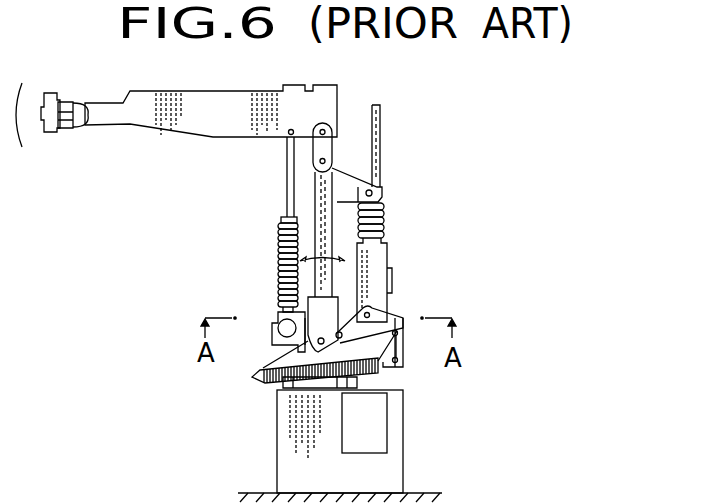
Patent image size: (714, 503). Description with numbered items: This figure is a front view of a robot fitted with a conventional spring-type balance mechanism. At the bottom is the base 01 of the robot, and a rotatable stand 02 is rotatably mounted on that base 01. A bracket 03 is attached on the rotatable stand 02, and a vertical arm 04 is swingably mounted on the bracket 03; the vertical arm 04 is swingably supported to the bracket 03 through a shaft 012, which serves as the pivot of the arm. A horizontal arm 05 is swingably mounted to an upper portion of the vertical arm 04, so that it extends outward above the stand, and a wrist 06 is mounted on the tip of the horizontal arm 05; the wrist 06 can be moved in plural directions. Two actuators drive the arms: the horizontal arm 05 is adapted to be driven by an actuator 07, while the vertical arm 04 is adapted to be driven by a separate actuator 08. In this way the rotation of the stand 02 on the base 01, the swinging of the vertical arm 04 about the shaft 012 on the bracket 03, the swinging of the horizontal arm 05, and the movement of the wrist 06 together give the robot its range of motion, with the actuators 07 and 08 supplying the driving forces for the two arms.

The base 01 is at (394, 446).
The rotatable stand 02 is at (360, 378).
The bracket 03 is at (273, 357).
The vertical arm 04 is at (320, 190).
The horizontal arm 05 is at (188, 100).
The wrist 06 is at (47, 92).
The actuator 07 is at (278, 242).
The actuator 08 is at (383, 245).
The shaft 012 is at (320, 340).